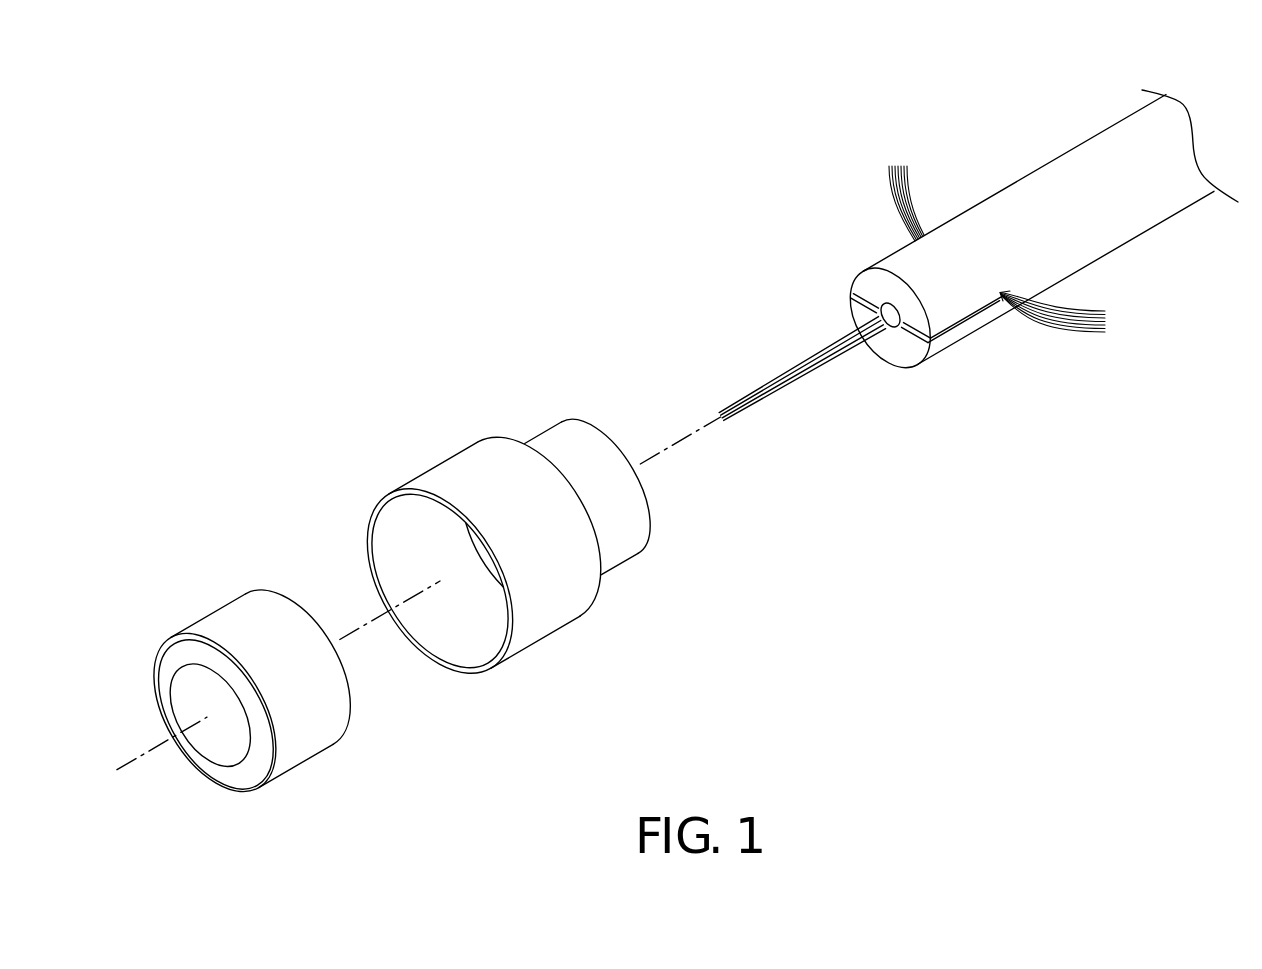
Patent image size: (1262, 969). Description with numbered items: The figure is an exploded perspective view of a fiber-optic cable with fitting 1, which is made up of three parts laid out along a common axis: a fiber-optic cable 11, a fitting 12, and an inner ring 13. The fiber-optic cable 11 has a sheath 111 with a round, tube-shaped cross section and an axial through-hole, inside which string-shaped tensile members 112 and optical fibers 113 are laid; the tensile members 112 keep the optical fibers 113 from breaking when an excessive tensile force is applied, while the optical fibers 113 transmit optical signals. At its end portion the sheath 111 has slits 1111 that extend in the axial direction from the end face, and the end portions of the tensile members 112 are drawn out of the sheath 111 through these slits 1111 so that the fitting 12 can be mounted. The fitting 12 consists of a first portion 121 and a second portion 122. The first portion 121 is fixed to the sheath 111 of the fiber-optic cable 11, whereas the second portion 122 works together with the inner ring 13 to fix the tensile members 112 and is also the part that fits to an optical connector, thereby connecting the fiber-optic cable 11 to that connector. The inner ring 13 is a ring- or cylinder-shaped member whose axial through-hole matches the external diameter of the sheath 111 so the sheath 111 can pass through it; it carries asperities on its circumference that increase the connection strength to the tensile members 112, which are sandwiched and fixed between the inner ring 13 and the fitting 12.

The fiber-optic cable with fitting 1 is at (677, 435).
The fiber-optic cable 11 is at (978, 267).
The sheath 111 is at (1107, 125).
The tensile members 112 is at (907, 185).
The optical fibers 113 is at (787, 387).
The slits 1111 is at (957, 358).
The fitting 12 is at (495, 546).
The first portion 121 is at (558, 435).
The second portion 122 is at (460, 468).
The inner ring 13 is at (302, 740).